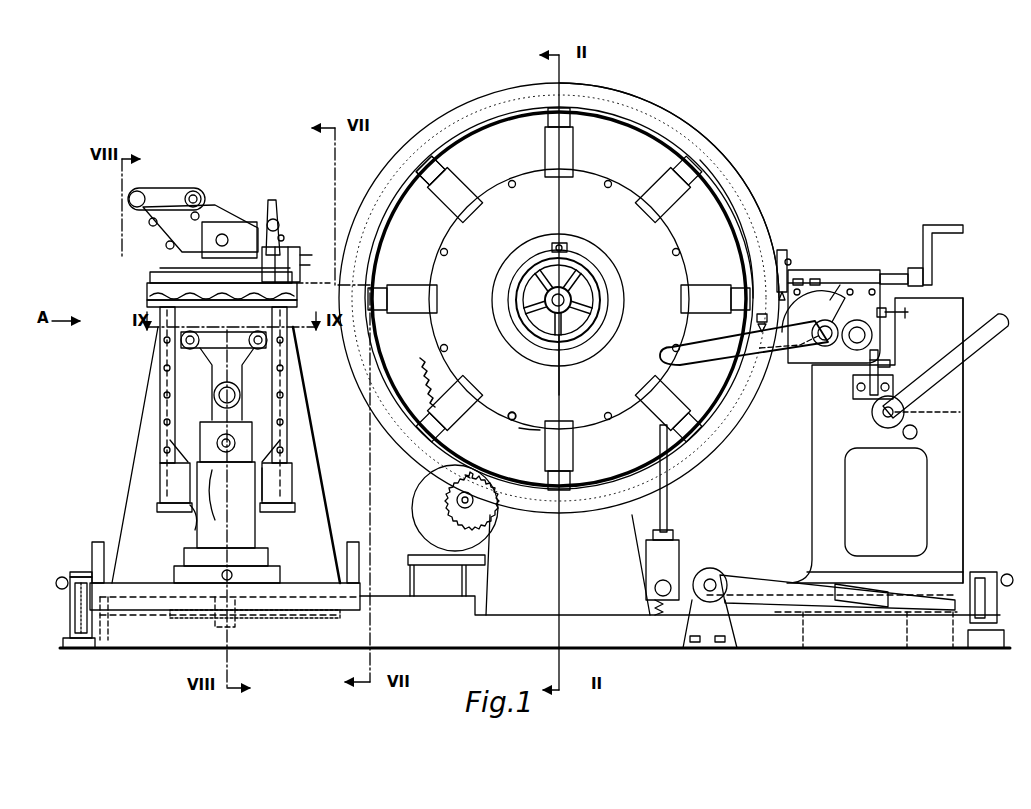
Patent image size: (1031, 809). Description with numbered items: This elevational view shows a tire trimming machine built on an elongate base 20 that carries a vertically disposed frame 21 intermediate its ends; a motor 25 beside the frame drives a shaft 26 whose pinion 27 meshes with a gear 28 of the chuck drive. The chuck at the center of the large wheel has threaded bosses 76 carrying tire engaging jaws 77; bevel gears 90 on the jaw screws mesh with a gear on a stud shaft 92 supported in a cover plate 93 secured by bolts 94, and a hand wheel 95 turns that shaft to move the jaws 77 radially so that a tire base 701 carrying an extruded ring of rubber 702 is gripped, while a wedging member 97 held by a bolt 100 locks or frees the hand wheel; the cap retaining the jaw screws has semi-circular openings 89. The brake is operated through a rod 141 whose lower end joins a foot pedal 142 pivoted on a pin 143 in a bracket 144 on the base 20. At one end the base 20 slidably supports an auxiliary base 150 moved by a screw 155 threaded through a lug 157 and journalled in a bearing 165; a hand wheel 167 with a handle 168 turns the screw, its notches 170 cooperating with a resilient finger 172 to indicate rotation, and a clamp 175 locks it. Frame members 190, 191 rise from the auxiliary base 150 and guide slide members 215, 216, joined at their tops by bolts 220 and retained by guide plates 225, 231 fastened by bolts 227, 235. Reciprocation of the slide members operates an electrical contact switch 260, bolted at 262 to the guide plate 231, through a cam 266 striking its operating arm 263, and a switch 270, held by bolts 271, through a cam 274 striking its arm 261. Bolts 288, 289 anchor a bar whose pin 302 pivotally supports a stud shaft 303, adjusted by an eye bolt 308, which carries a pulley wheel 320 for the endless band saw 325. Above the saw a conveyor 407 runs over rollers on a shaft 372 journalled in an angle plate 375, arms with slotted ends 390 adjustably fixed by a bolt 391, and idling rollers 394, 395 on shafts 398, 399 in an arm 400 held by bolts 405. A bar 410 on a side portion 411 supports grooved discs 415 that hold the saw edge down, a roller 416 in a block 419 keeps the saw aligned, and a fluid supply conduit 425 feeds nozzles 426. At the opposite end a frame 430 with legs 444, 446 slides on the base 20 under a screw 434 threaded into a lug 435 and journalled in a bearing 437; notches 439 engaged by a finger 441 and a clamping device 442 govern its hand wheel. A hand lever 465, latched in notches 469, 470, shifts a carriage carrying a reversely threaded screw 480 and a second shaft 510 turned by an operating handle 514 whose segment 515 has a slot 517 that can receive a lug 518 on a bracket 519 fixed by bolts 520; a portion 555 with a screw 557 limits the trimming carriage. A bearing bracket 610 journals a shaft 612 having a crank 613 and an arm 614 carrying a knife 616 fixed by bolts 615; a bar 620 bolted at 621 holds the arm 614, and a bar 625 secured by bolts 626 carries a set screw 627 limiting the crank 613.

The base 20 is at (445, 645).
The frame 21 is at (534, 612).
The motor 25 is at (425, 512).
The shaft 26 is at (457, 499).
The pinion 27 is at (448, 517).
The gear 28 is at (420, 376).
The bosses 76 is at (453, 175).
The tire engaging jaws 77 is at (437, 160).
The semi-circular openings 89 is at (530, 431).
The bevel gears 90 is at (516, 413).
The stud shaft 92 is at (555, 305).
The cover plate 93 is at (594, 168).
The bolts 94 is at (672, 255).
The hand wheel 95 is at (562, 350).
The wedging member 97 is at (568, 247).
The bolt 100 is at (566, 243).
The rod 141 is at (668, 515).
The foot pedal 142 is at (736, 579).
The pin 143 is at (716, 576).
The bracket 144 is at (738, 648).
The auxiliary base 150 is at (165, 600).
The screw 155 is at (300, 618).
The lug 157 is at (237, 615).
The bearing 165 is at (103, 640).
The hand wheel 167 is at (70, 618).
The handle 168 is at (58, 587).
The notches 170 is at (75, 598).
The resilient finger 172 is at (75, 574).
The clamp 175 is at (63, 645).
The frame member 190 is at (327, 518).
The frame member 191 is at (121, 531).
The slide member 215 is at (249, 496).
The slide member 216 is at (211, 479).
The bolts 220 is at (200, 416).
The guide plate 225 is at (288, 384).
The bolts 227 is at (284, 341).
The guide plate 231 is at (160, 401).
The bolts 235 is at (163, 384).
The electrical contact switch 260 is at (160, 482).
The arm 261 is at (292, 464).
The bolts 262 is at (157, 506).
The operating arm 263 is at (172, 444).
The cam 266 is at (196, 522).
The switch 270 is at (292, 482).
The bolts 271 is at (295, 506).
The cam 274 is at (282, 447).
The bolt 288 is at (181, 341).
The bolt 289 is at (267, 338).
The pin 302 is at (268, 348).
The stud shaft 303 is at (213, 377).
The eye bolt 308 is at (237, 399).
The pulley wheel 320 is at (147, 305).
The endless band saw 325 is at (147, 295).
The shaft 372 is at (225, 236).
The angle plate 375 is at (160, 230).
The slotted ends 390 is at (166, 247).
The bolt 391 is at (149, 223).
The idling roller 394 is at (155, 196).
The idling roller 395 is at (150, 277).
The shaft 398 is at (198, 192).
The shaft 399 is at (160, 267).
The arm 400 is at (198, 199).
The bolts 405 is at (199, 215).
The belt or conveyor 407 is at (162, 188).
The bar 410 is at (280, 252).
The side portion 411 is at (274, 200).
The grooved discs 415 is at (300, 258).
The roller 416 is at (298, 283).
The block 419 is at (297, 268).
The fluid supply conduit 425 is at (279, 223).
The nozzles 426 is at (284, 239).
The frame 430 is at (963, 487).
The screw 434 is at (908, 650).
The lug 435 is at (806, 650).
The bearing 437 is at (954, 650).
The notches 439 is at (1005, 628).
The finger 441 is at (983, 572).
The clamping device 442 is at (1007, 578).
The leg 444 is at (963, 518).
The leg 446 is at (875, 445).
The hand lever 465 is at (960, 365).
The notch 469 is at (918, 433).
The notch 470 is at (960, 412).
The screw 480 is at (853, 349).
The second shaft 510 is at (825, 343).
The operating handle 514 is at (726, 360).
The segment 515 is at (832, 298).
The slot 517 is at (793, 350).
The lug 518 is at (880, 350).
The bracket 519 is at (890, 362).
The bolts 520 is at (861, 399).
The portion 555 is at (757, 318).
The screw 557 is at (758, 327).
The bearing bracket 610 is at (869, 278).
The shaft 612 is at (896, 274).
The crank 613 is at (932, 253).
The arm 614 is at (800, 277).
The bolts 615 is at (792, 260).
The knife 616 is at (781, 250).
The bar 620 is at (815, 278).
The bolts 621 is at (841, 285).
The bar 625 is at (888, 311).
The bolts 626 is at (905, 298).
The set screw 627 is at (910, 315).
The tire base 701 is at (716, 182).
The extruded ring of rubber 702 is at (756, 220).